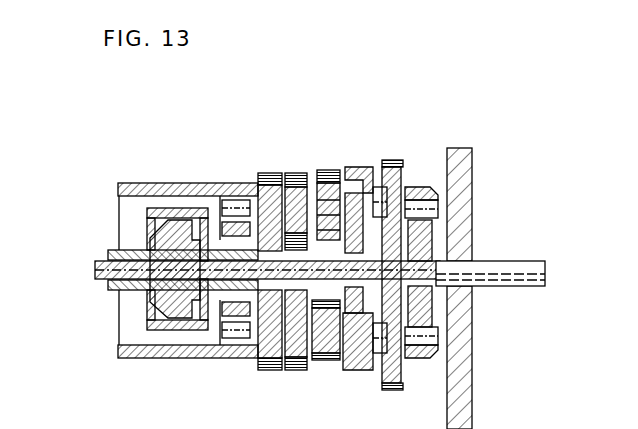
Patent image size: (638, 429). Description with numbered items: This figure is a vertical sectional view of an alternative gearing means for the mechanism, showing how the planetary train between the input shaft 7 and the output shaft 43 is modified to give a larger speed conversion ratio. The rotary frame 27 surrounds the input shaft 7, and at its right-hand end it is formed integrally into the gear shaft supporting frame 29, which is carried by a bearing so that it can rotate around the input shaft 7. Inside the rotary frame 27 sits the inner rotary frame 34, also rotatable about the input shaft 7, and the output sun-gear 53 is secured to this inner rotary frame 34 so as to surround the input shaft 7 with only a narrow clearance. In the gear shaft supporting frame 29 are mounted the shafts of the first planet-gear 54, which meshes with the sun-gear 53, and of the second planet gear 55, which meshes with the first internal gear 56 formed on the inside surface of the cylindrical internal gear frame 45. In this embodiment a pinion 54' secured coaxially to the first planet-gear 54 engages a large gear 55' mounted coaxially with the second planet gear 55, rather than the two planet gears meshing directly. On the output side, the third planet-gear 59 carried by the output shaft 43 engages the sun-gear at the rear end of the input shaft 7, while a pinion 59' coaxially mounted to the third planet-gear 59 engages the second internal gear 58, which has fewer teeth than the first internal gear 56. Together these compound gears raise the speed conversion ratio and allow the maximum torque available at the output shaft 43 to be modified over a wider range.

The input shaft 7 is at (100, 268).
The rotary frame 27 is at (135, 183).
The gear shaft supporting frame 29 is at (240, 358).
The inner rotary frame 34 is at (216, 183).
The output shaft 43 is at (520, 263).
The internal gear frame 45 is at (435, 187).
The sun-gear 53 is at (282, 312).
The first planet-gear 54 is at (261, 178).
The pinion 54' is at (289, 237).
The second planet-gear 55 is at (348, 206).
The large gear 55' is at (321, 231).
The first internal gear 56 is at (372, 165).
The second internal gear 58 is at (383, 162).
The third planet-gear 59 is at (443, 228).
The pinion 59' is at (478, 263).